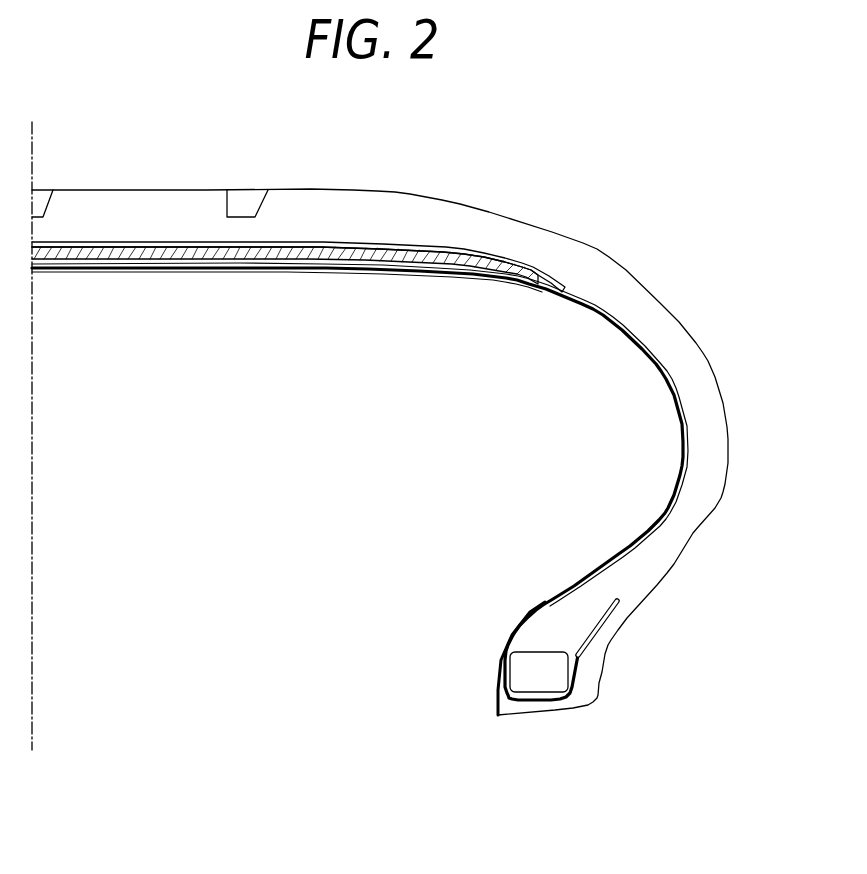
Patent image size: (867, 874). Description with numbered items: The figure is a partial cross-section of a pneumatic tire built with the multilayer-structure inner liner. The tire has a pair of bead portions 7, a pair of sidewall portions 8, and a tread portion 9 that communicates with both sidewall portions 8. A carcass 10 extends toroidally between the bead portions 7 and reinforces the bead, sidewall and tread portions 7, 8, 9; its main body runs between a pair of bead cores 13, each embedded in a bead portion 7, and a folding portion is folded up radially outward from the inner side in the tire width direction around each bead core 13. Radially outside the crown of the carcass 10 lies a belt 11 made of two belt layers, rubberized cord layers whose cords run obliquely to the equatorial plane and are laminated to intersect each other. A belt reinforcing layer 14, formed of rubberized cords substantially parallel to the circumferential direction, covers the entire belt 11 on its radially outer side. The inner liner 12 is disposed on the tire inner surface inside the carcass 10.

The bead portion 7 is at (615, 640).
The sidewall portion 8 is at (703, 343).
The tread portion 9 is at (118, 190).
The carcass 10 is at (603, 319).
The belt 11 is at (310, 247).
The inner liner 12 is at (527, 607).
The bead core 13 is at (538, 678).
The belt reinforcing layer 14 is at (463, 254).